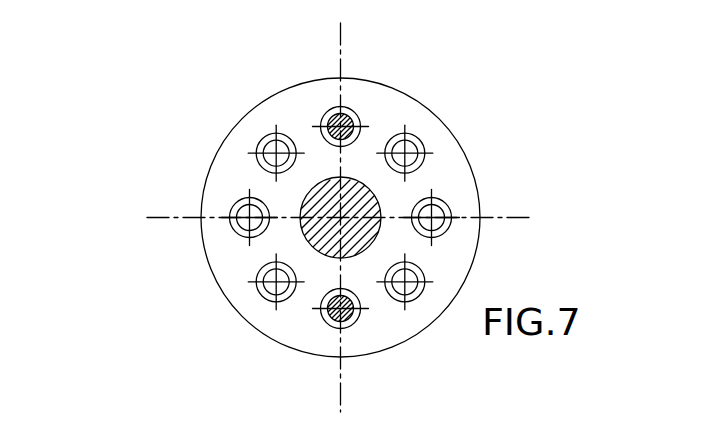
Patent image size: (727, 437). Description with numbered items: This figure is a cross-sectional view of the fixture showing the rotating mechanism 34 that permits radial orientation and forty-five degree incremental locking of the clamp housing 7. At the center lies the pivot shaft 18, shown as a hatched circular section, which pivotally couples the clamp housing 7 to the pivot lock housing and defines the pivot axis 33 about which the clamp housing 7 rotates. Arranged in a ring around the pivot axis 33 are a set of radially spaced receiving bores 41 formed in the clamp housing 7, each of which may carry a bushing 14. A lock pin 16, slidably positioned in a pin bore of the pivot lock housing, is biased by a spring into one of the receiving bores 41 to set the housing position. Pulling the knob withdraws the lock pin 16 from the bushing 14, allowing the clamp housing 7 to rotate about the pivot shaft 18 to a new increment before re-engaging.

The clamp housing 7 is at (293, 84).
The bushing 14 is at (261, 296).
The lock pin 16 is at (350, 115).
The pivot shaft 18 is at (328, 242).
The pivot axis 33 is at (347, 213).
The rotating mechanism 34 is at (90, 113).
The receiving bore 41 is at (418, 139).